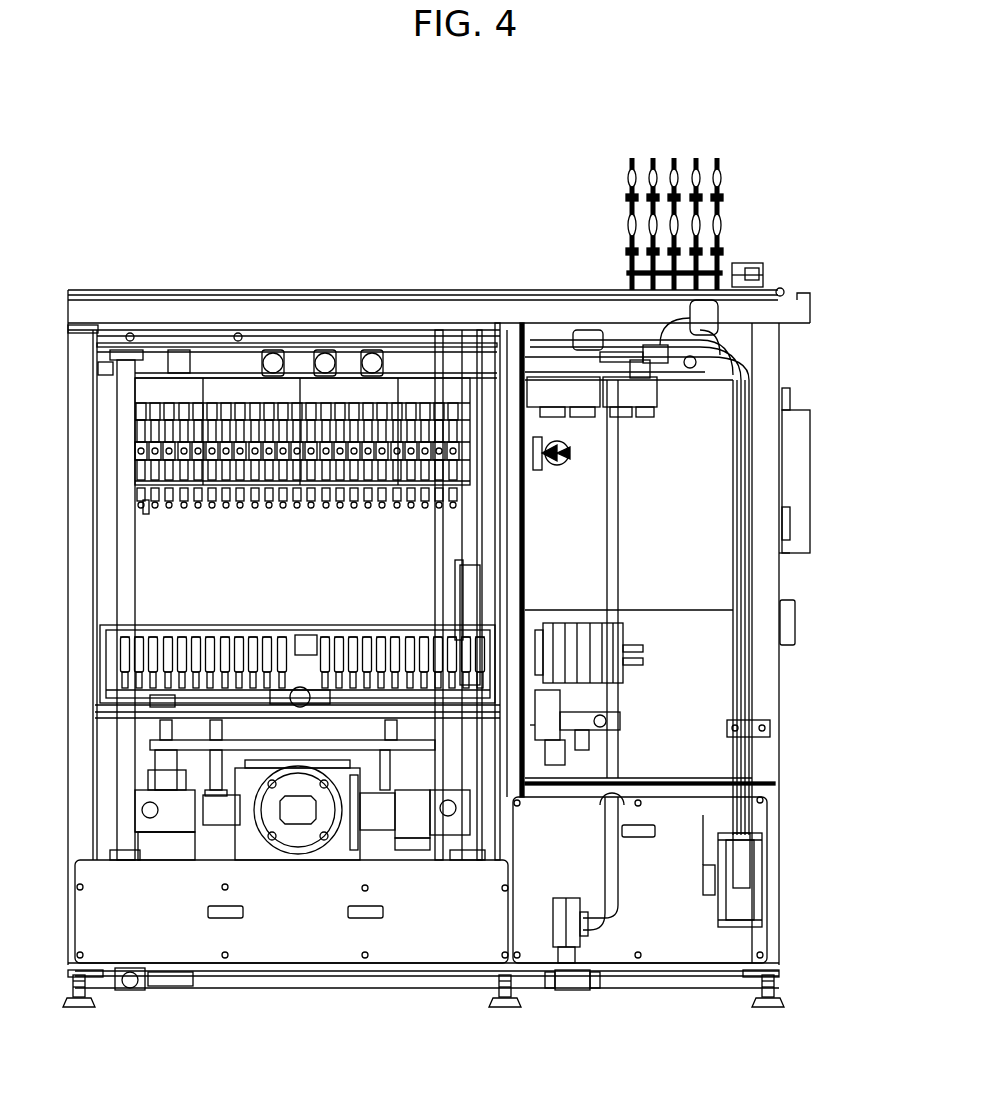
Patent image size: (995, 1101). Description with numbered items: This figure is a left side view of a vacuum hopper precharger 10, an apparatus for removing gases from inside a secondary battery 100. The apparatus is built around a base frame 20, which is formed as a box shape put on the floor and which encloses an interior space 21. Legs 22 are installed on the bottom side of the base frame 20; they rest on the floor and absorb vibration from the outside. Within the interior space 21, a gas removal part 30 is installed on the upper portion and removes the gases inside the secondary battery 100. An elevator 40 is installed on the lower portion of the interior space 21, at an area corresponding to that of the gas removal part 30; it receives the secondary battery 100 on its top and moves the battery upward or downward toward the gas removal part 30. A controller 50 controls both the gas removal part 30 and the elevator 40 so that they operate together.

The vacuum hopper precharger 10 is at (62, 171).
The base frame 20 is at (795, 279).
The interior space 21 is at (200, 579).
The legs 22 is at (784, 990).
The gas removal part 30 is at (128, 458).
The elevator 40 is at (135, 760).
The controller 50 is at (818, 420).
The secondary battery 100 is at (298, 635).